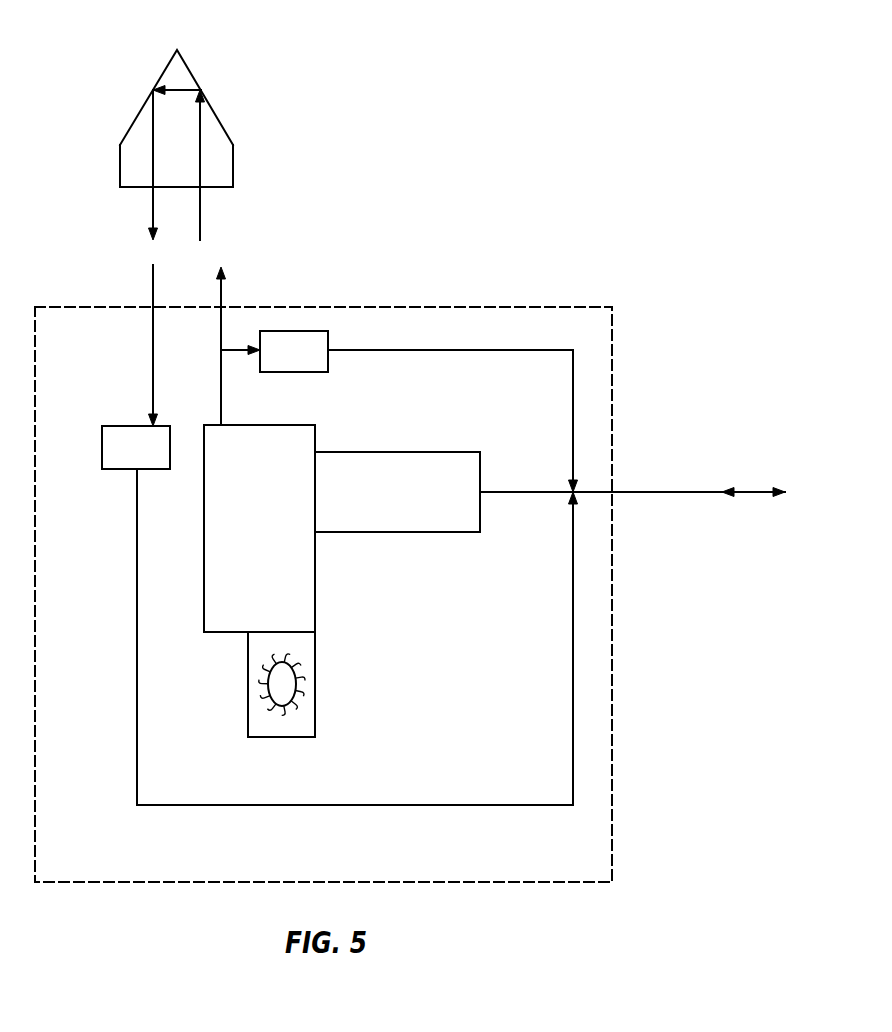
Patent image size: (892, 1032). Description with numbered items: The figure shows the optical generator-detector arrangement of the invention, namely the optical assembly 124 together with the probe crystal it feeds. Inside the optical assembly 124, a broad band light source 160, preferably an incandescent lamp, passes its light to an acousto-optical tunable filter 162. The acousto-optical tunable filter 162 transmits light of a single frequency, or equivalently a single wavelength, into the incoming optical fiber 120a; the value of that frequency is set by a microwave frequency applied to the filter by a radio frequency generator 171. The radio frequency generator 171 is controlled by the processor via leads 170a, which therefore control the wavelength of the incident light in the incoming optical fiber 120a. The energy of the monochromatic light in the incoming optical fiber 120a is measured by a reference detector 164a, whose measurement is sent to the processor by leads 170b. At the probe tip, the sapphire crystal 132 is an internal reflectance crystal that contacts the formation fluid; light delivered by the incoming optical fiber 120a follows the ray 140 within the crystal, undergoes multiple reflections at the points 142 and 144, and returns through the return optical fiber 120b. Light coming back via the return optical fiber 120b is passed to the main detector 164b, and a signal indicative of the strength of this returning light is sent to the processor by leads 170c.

The optical assembly 124 is at (590, 868).
The ray 140 is at (189, 78).
The sapphire crystal 132 is at (213, 139).
The reflection point 142 is at (241, 81).
The reflection point 144 is at (137, 68).
The incoming optical fiber 120a is at (223, 270).
The return optical fiber 120b is at (109, 258).
The reference detector 164a is at (314, 320).
The main detector 164b is at (102, 426).
The acousto-optical tunable filter 162 is at (299, 535).
The radio frequency generator 171 is at (434, 468).
The broad band light source 160 is at (322, 706).
The leads 170a is at (635, 534).
The leads 170b is at (461, 380).
The leads 170c is at (357, 676).